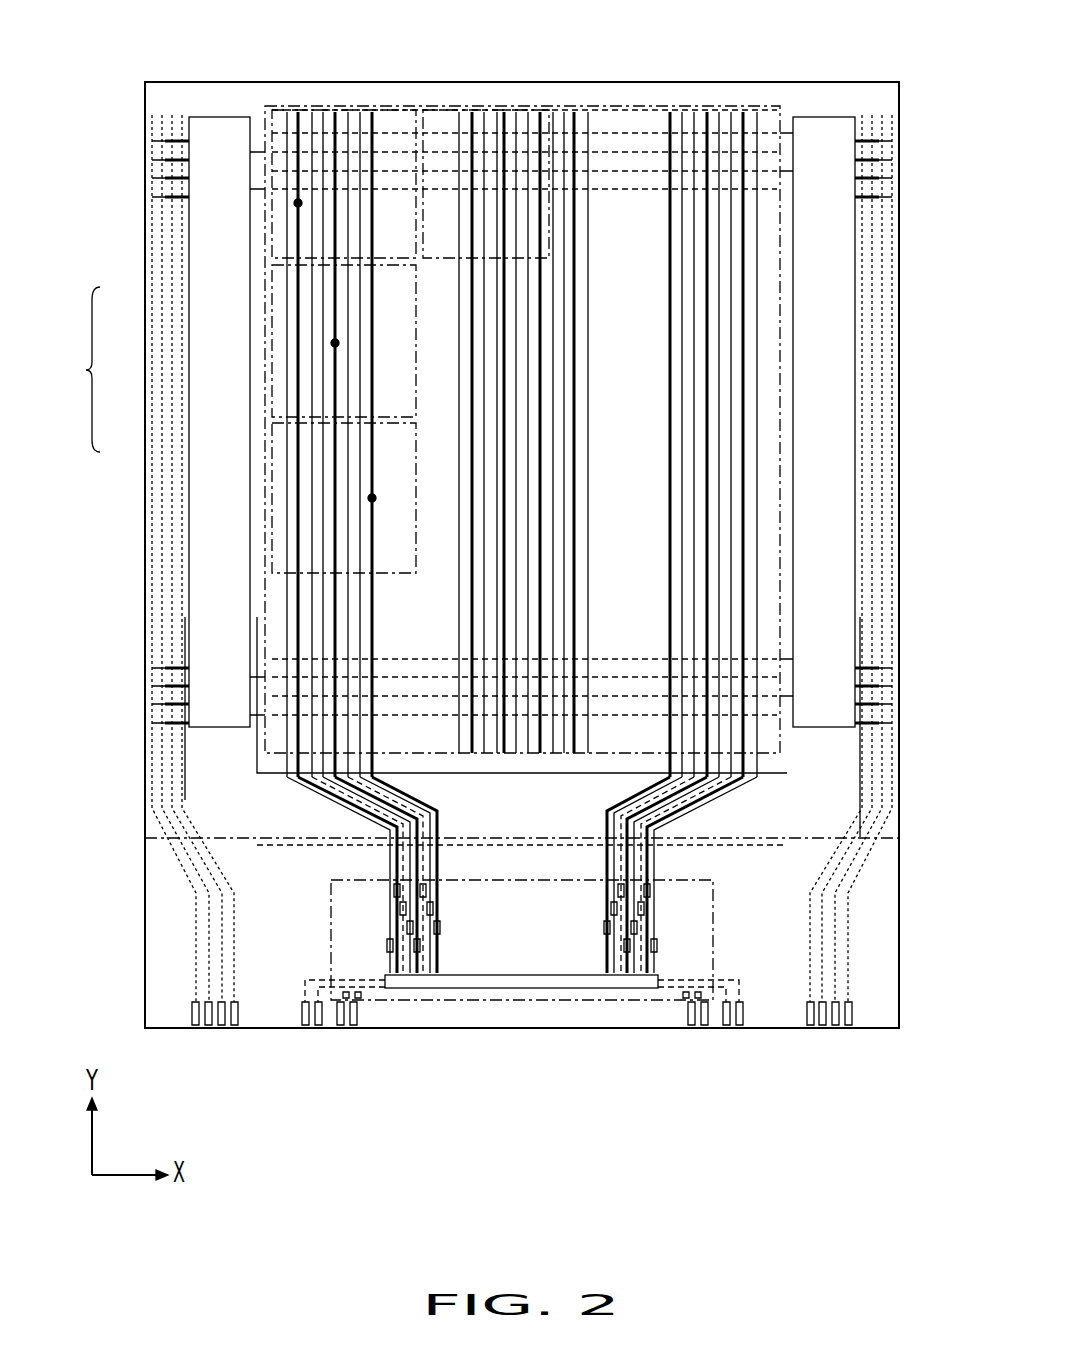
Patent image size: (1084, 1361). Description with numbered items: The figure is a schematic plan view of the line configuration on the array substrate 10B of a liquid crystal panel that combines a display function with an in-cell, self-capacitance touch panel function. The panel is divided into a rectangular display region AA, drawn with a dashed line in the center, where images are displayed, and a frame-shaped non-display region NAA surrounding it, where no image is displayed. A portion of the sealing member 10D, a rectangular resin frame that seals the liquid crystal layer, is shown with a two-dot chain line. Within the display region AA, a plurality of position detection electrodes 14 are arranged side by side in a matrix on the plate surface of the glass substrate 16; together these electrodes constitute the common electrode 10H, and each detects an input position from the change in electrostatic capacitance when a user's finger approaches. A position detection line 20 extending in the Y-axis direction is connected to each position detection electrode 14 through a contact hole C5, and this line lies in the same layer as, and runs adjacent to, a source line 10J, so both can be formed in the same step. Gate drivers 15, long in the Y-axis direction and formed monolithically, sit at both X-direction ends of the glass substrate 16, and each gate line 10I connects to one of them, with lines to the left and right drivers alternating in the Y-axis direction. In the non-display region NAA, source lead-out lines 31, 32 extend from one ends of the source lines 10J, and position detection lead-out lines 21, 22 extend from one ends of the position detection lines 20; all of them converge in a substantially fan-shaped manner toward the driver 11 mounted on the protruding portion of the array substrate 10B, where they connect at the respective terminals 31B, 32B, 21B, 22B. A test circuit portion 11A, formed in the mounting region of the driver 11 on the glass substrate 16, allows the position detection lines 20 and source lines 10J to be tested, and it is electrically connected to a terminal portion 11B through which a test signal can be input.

The array substrate 10B is at (850, 100).
The gate driver 15 is at (217, 127).
The source line 10J is at (307, 128).
The contact hole C5 is at (372, 498).
The position detection electrode 14 is at (438, 122).
The gate line 10I is at (280, 193).
The common electrode 10H is at (71, 369).
The position detection line 20 is at (297, 615).
The display region AA is at (768, 338).
The sealing member 10D is at (818, 746).
The source lead-out line 31 is at (297, 797).
The source lead-out line 32 is at (307, 790).
The glass substrate 16 is at (167, 955).
The non-display region NAA is at (880, 903).
The position detection lead-out line 21 is at (330, 795).
The position detection lead-out line 22 is at (347, 798).
The driver 11 is at (563, 940).
The test circuit portion 11A is at (640, 980).
The terminal portion 11B is at (321, 1027).
The terminal 31B is at (398, 897).
The terminal 32B is at (392, 947).
The terminal 21B is at (425, 893).
The terminal 22B is at (413, 927).